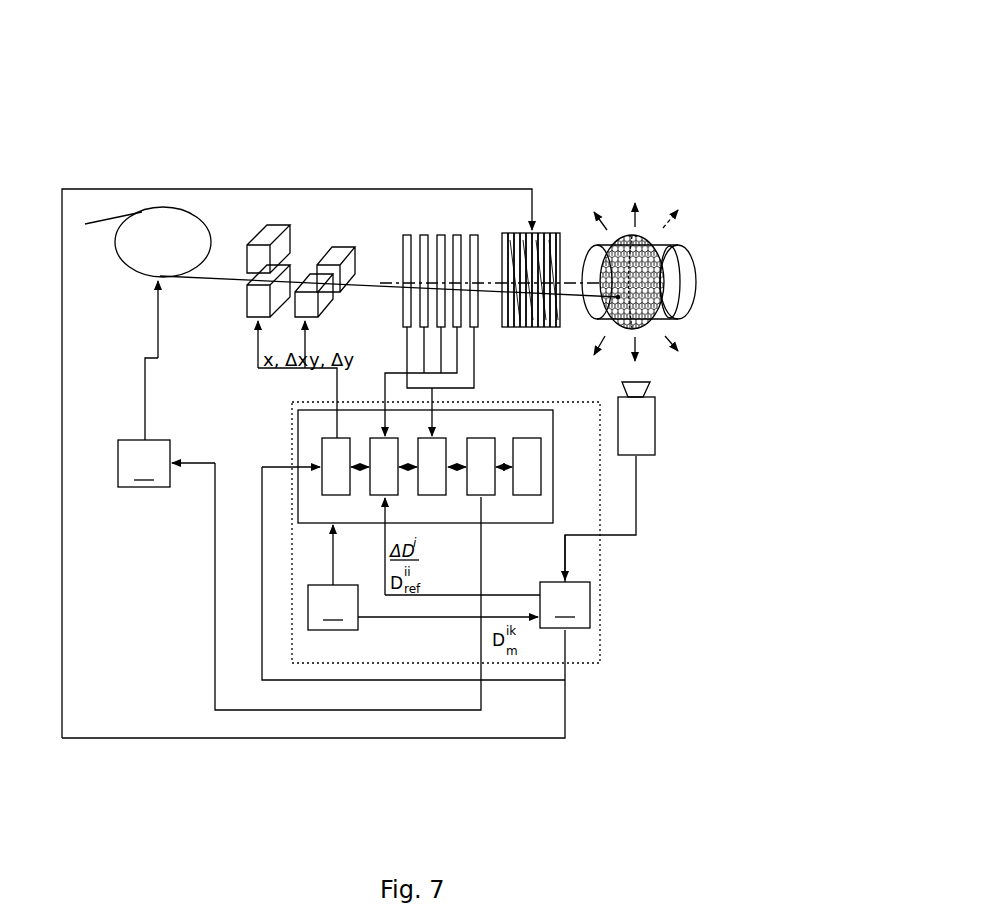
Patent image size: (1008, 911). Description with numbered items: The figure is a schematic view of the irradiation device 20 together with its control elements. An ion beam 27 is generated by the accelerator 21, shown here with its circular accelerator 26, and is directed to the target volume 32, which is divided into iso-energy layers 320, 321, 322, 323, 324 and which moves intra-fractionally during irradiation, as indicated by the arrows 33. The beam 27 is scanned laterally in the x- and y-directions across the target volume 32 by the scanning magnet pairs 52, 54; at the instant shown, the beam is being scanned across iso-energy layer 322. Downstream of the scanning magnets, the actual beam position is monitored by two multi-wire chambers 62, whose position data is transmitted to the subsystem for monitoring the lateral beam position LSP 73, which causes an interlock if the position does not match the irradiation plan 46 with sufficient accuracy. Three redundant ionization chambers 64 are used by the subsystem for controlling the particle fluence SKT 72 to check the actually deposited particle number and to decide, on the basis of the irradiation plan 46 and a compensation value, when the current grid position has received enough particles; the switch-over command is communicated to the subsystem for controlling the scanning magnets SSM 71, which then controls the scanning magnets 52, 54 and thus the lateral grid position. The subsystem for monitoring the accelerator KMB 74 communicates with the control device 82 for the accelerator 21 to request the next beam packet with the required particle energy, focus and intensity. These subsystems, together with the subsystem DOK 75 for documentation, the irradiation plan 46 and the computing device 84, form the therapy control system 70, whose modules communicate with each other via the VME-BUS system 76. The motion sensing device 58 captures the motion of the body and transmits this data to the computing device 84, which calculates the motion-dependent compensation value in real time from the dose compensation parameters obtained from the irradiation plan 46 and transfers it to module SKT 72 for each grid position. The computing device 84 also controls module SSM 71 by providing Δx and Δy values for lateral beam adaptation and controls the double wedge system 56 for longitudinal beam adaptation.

The irradiation device 20 is at (554, 125).
The accelerator 21 is at (126, 289).
The circular accelerator 26 is at (194, 208).
The ion beam 27 is at (485, 300).
The target volume 32 is at (653, 265).
The arrows 33 is at (668, 341).
The irradiation plan 46 is at (333, 607).
The scanning magnet pair 52 is at (282, 224).
The scanning magnet pair 54 is at (343, 246).
The double wedge system 56 is at (523, 330).
The motion sensing device 58 is at (655, 420).
The multi-wire chambers 62 is at (407, 234).
The ionization chambers 64 is at (424, 234).
The therapy control system 70 is at (602, 578).
The subsystem for controlling the scanning magnets SSM 71 is at (322, 448).
The subsystem for controlling the particle fluence SKT 72 is at (377, 436).
The subsystem for monitoring the lateral beam position LSP 73 is at (432, 496).
The subsystem for monitoring the accelerator KMB 74 is at (487, 496).
The subsystem DOK for documentation 75 is at (525, 496).
The VME-BUS system 76 is at (553, 468).
The control device 82 is at (144, 463).
The computing device 84 is at (565, 605).
The iso-energy layer 320 is at (697, 270).
The iso-energy layer 321 is at (677, 258).
The iso-energy layer 322 is at (645, 234).
The iso-energy layer 323 is at (594, 250).
The iso-energy layer 324 is at (585, 318).